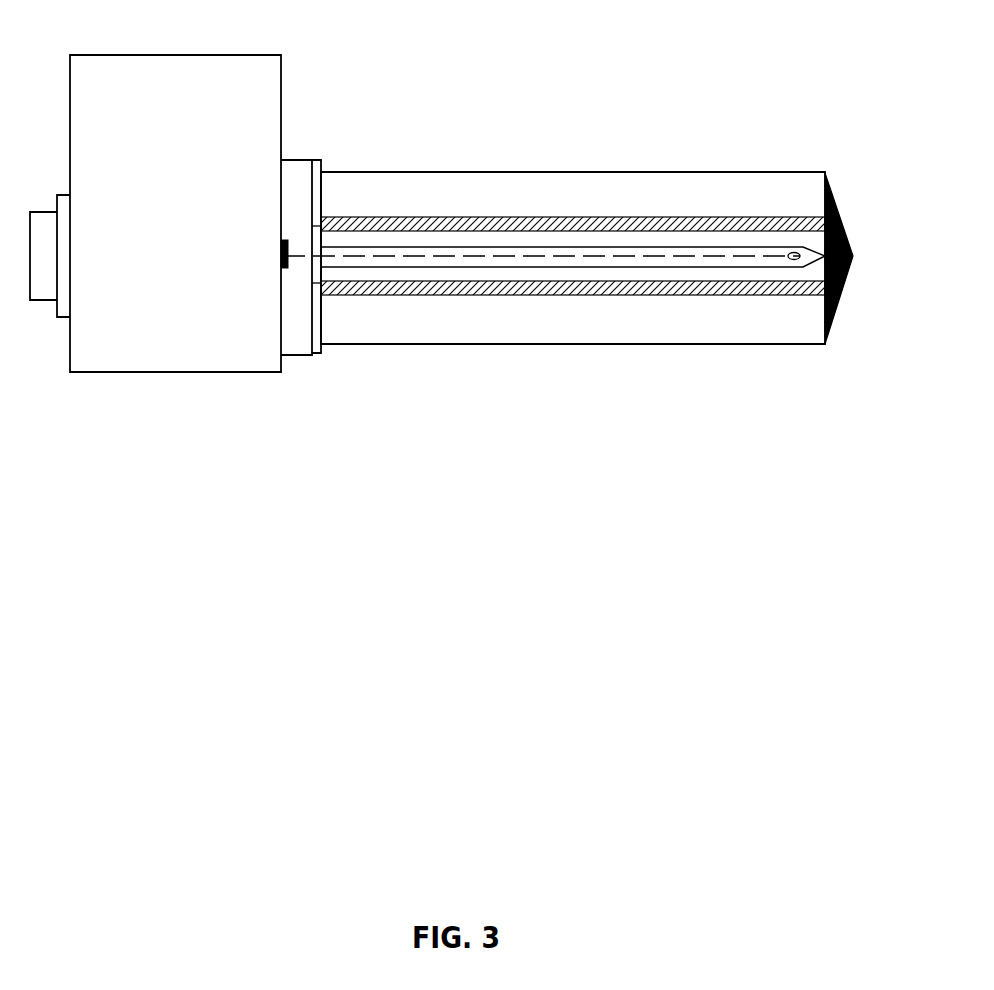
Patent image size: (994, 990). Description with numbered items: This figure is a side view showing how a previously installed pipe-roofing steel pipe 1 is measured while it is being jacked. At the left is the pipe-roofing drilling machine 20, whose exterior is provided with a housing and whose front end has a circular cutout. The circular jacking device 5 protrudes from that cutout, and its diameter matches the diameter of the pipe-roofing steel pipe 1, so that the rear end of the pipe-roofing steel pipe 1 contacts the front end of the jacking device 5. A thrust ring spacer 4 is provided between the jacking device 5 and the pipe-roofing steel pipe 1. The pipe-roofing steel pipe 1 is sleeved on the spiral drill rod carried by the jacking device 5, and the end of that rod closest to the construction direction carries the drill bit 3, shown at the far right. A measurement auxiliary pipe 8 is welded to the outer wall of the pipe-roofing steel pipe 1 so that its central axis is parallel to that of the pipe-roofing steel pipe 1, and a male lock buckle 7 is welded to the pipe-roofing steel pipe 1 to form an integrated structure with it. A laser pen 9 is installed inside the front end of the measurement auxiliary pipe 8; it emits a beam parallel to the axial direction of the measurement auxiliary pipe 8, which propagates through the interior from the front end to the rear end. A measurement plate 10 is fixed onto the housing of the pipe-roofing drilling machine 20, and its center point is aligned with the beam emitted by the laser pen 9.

The pipe-roofing steel pipe 1 is at (438, 173).
The drill bit 3 is at (852, 257).
The thrust ring spacer 4 is at (321, 160).
The jacking device 5 is at (290, 160).
The male lock buckle 7 is at (533, 217).
The measurement auxiliary pipe 8 is at (602, 245).
The laser pen 9 is at (796, 252).
The measurement plate 10 is at (288, 270).
The pipe-roofing drilling machine 20 is at (122, 347).